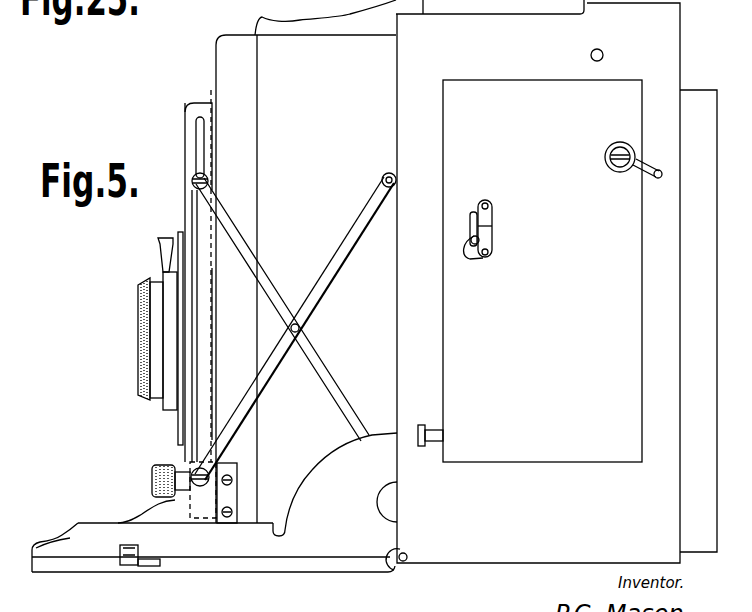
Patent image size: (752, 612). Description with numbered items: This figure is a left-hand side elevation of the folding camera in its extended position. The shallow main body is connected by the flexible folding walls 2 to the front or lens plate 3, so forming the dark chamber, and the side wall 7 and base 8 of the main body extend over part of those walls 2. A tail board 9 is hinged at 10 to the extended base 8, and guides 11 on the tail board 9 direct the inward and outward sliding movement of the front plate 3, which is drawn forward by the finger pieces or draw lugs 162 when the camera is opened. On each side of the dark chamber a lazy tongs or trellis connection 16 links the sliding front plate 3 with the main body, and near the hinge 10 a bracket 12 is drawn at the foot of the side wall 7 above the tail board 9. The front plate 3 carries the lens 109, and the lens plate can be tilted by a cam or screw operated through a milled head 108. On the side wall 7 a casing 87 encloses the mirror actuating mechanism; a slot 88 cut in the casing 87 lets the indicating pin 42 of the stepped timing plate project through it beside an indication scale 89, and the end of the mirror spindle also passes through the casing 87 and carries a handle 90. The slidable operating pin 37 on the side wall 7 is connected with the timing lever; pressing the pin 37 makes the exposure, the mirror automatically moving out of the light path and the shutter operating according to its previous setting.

The folding walls 2 is at (325, 76).
The front or lens plate 3 is at (235, 57).
The side wall 7 is at (538, 281).
The base 8 is at (490, 565).
The tail board 9 is at (253, 573).
The hinge 10 is at (401, 563).
The guides 11 is at (78, 548).
The bracket 12 is at (345, 530).
The lazy tongs or trellis connection 16 is at (348, 212).
The operating pin 37 is at (432, 432).
The pin 42 is at (479, 237).
The casing 87 is at (512, 260).
The slot 88 is at (492, 258).
The indication scale 89 is at (491, 214).
The handle 90 is at (654, 180).
The milled head 108 is at (152, 478).
The lens 109 is at (163, 380).
The finger pieces or draw lugs 162 is at (140, 516).